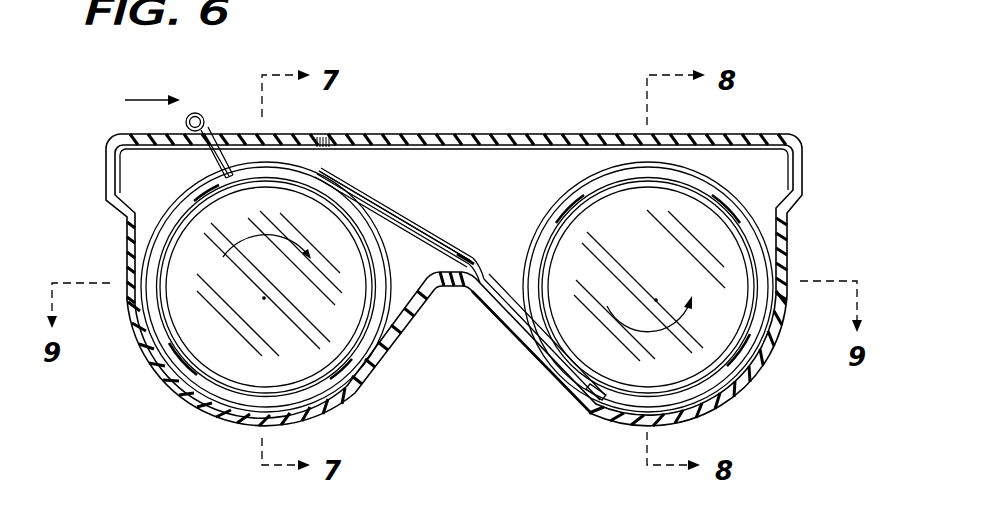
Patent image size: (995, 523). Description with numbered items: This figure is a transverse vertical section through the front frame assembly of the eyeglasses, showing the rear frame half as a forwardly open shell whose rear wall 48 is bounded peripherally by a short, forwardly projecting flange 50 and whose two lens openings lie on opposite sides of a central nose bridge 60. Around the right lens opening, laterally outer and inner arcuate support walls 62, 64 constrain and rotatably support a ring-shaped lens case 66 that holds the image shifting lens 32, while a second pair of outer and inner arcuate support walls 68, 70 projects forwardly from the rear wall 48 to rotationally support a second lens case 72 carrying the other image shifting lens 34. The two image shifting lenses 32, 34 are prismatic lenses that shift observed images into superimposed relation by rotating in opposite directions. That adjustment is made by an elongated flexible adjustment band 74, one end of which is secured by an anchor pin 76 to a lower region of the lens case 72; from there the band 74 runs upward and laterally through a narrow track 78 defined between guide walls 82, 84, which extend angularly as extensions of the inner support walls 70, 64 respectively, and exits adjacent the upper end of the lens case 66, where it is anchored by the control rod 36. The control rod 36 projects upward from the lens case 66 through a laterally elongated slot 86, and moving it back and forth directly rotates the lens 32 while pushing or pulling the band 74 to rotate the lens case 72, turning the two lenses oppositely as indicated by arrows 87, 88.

The image shifting lens 32 is at (188, 390).
The image shifting lens 34 is at (592, 207).
The control rod 36 is at (208, 133).
The rear wall 48 is at (476, 176).
The flange 50 is at (455, 133).
The nose bridge 60 is at (441, 290).
The outer arcuate support wall 62 is at (161, 346).
The inner arcuate support wall 64 is at (368, 320).
The lens case 66 is at (228, 382).
The outer arcuate support wall 68 is at (760, 248).
The inner arcuate support wall 70 is at (551, 226).
The lens case 72 is at (708, 194).
The adjustment band 74 is at (540, 340).
The anchor pin 76 is at (592, 396).
The track 78 is at (389, 204).
The guide wall 82 is at (414, 220).
The guide wall 84 is at (412, 238).
The slot 86 is at (322, 136).
The arrow 87 is at (229, 252).
The arrow 88 is at (642, 333).